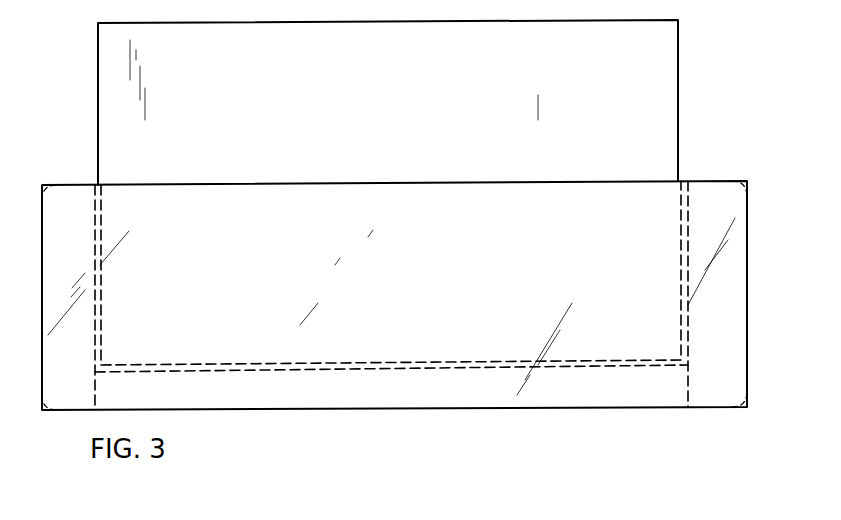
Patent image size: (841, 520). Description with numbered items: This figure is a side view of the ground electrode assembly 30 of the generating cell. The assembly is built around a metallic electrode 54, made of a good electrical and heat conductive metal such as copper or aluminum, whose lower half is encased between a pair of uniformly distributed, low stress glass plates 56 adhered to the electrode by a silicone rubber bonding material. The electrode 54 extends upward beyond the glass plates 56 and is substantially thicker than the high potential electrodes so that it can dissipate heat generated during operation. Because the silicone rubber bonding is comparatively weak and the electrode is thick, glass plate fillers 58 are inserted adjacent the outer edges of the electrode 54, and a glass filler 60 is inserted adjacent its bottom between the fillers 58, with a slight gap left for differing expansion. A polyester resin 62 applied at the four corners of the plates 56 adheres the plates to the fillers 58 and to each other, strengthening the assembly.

The ground electrode assembly 30 is at (651, 412).
The metallic electrode 54 is at (603, 110).
The glass plates 56 is at (461, 309).
The glass plate fillers 58 is at (735, 316).
The glass filler 60 is at (497, 400).
The polyester resin 62 is at (742, 181).